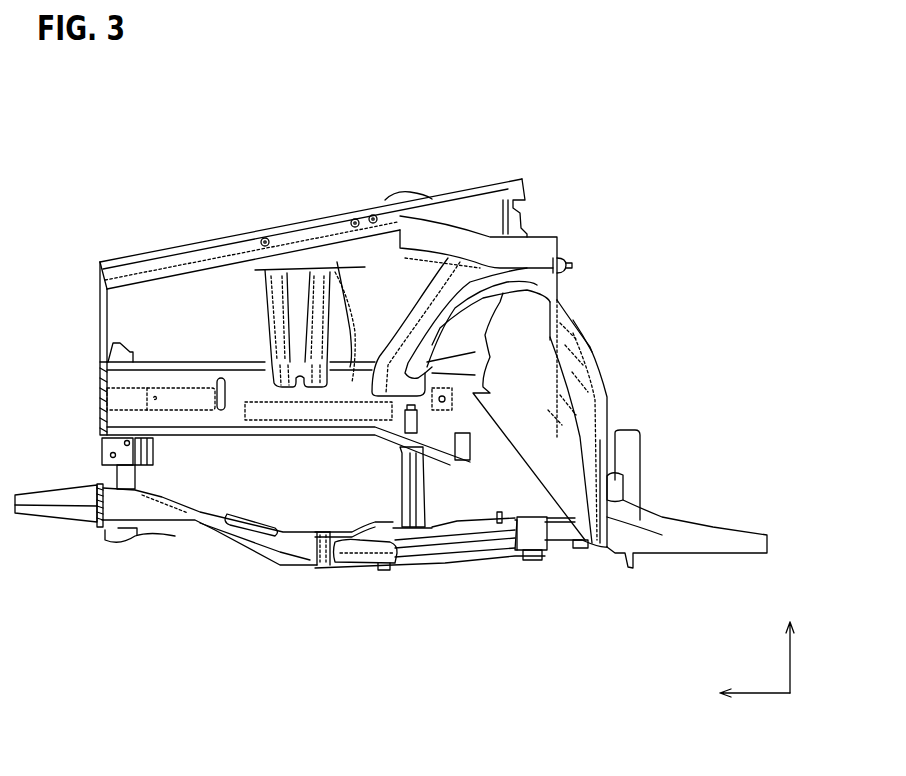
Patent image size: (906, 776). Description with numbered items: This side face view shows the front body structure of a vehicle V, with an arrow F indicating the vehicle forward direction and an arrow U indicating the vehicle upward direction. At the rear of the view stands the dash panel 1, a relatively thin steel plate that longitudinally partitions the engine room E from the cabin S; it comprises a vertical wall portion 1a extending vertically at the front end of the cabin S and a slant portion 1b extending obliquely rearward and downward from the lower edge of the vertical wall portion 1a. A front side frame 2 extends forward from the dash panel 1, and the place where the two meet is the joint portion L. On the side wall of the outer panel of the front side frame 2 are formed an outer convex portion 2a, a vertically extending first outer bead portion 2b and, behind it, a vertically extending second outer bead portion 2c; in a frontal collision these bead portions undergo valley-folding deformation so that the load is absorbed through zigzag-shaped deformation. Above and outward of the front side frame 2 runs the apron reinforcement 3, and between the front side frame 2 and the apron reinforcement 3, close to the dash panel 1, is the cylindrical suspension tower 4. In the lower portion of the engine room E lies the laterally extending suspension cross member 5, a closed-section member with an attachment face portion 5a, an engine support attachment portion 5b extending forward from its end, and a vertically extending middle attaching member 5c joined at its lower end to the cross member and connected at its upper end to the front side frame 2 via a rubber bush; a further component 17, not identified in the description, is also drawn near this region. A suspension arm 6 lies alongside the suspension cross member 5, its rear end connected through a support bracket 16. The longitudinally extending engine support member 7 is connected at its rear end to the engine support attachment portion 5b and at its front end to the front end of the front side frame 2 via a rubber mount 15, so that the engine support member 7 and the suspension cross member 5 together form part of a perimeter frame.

The dash panel 1 is at (575, 315).
The vertical wall portion 1a is at (587, 347).
The slant portion 1b is at (626, 487).
The front side frame 2 is at (172, 358).
The outer convex portion 2a is at (171, 400).
The first outer bead portion 2b is at (221, 378).
The second outer bead portion 2c is at (462, 433).
The apron reinforcement 3 is at (283, 217).
The suspension tower 4 is at (409, 193).
The suspension cross member 5 is at (452, 566).
The attachment face portion 5a is at (572, 550).
The engine support attachment portion 5b is at (327, 542).
The middle attaching member 5c is at (402, 490).
The suspension arm 6 is at (372, 558).
The engine support member 7 is at (213, 527).
The rubber mount 15 is at (118, 477).
The support bracket 16 is at (525, 556).
The front mount bolt 17 is at (402, 455).
The cabin S is at (683, 264).
The engine room E is at (263, 485).
The joint portion L is at (515, 437).
The vehicle V is at (525, 72).
The arrow U is at (793, 653).
The arrow F is at (755, 693).